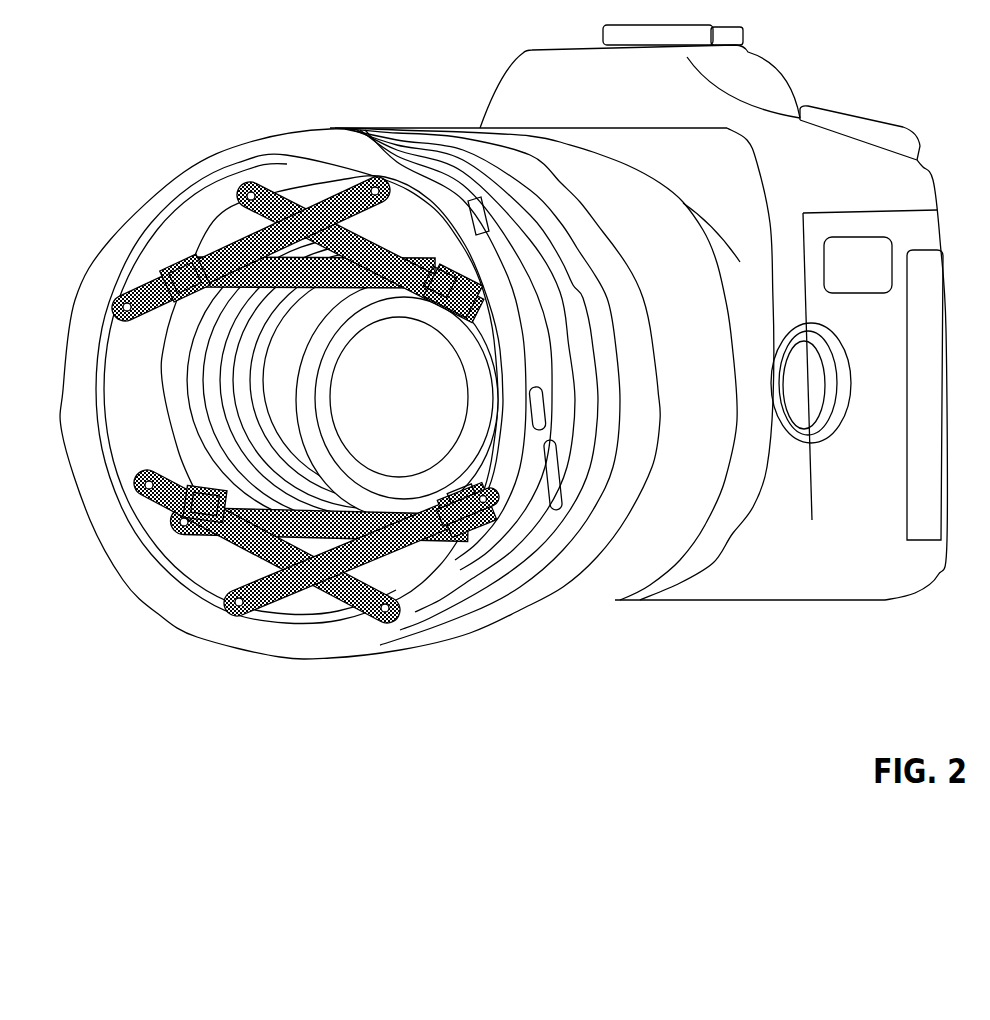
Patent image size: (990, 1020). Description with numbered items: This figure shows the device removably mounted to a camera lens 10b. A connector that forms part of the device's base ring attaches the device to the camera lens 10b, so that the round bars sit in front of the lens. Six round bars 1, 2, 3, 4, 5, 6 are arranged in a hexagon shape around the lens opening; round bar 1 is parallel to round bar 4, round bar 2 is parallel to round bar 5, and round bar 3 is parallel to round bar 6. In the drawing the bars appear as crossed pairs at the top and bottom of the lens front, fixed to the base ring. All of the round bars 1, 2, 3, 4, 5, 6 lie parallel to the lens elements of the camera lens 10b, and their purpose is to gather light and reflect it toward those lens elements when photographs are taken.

The round bar 1 is at (192, 262).
The round bar 2 is at (347, 238).
The round bar 3 is at (273, 272).
The round bar 4 is at (397, 533).
The round bar 5 is at (287, 548).
The round bar 6 is at (347, 525).
The camera lens 10b is at (655, 528).